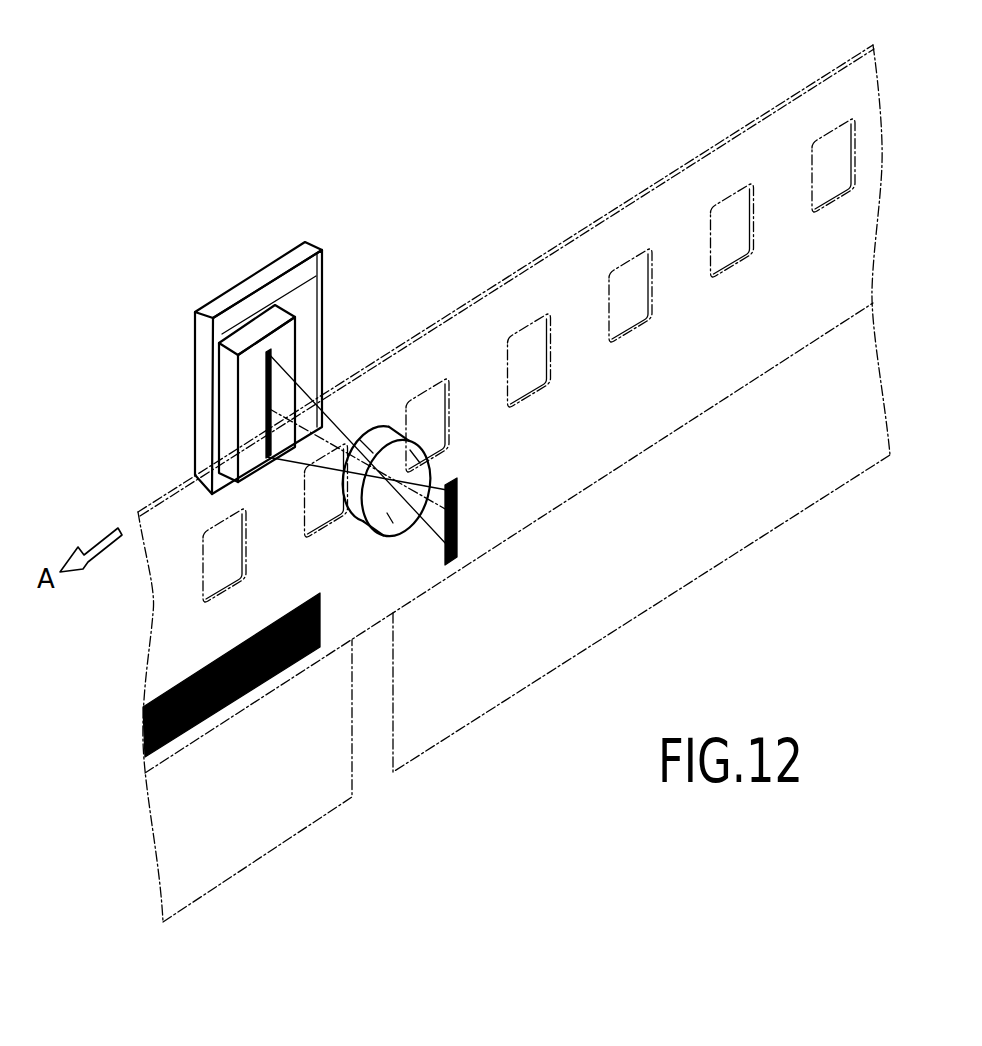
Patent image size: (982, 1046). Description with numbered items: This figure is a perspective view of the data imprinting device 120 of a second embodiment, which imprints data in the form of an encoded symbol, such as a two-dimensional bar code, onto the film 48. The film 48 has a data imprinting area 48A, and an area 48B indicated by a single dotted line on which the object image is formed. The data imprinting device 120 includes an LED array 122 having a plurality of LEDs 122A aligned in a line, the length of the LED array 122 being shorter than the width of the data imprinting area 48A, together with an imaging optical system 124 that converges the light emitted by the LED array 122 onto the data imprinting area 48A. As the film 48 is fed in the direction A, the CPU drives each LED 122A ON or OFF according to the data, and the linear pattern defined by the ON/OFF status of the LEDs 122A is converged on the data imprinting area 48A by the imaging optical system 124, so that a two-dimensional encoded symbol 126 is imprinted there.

The film 48 is at (747, 123).
The data imprinting area 48A is at (838, 287).
The area on which the object image is formed 48B is at (717, 553).
The data imprinting device 120 is at (250, 269).
The LED array 122 is at (230, 383).
The LED 122A is at (265, 421).
The imaging optical system 124 is at (381, 436).
The two-dimensional encoded symbol 126 is at (227, 710).